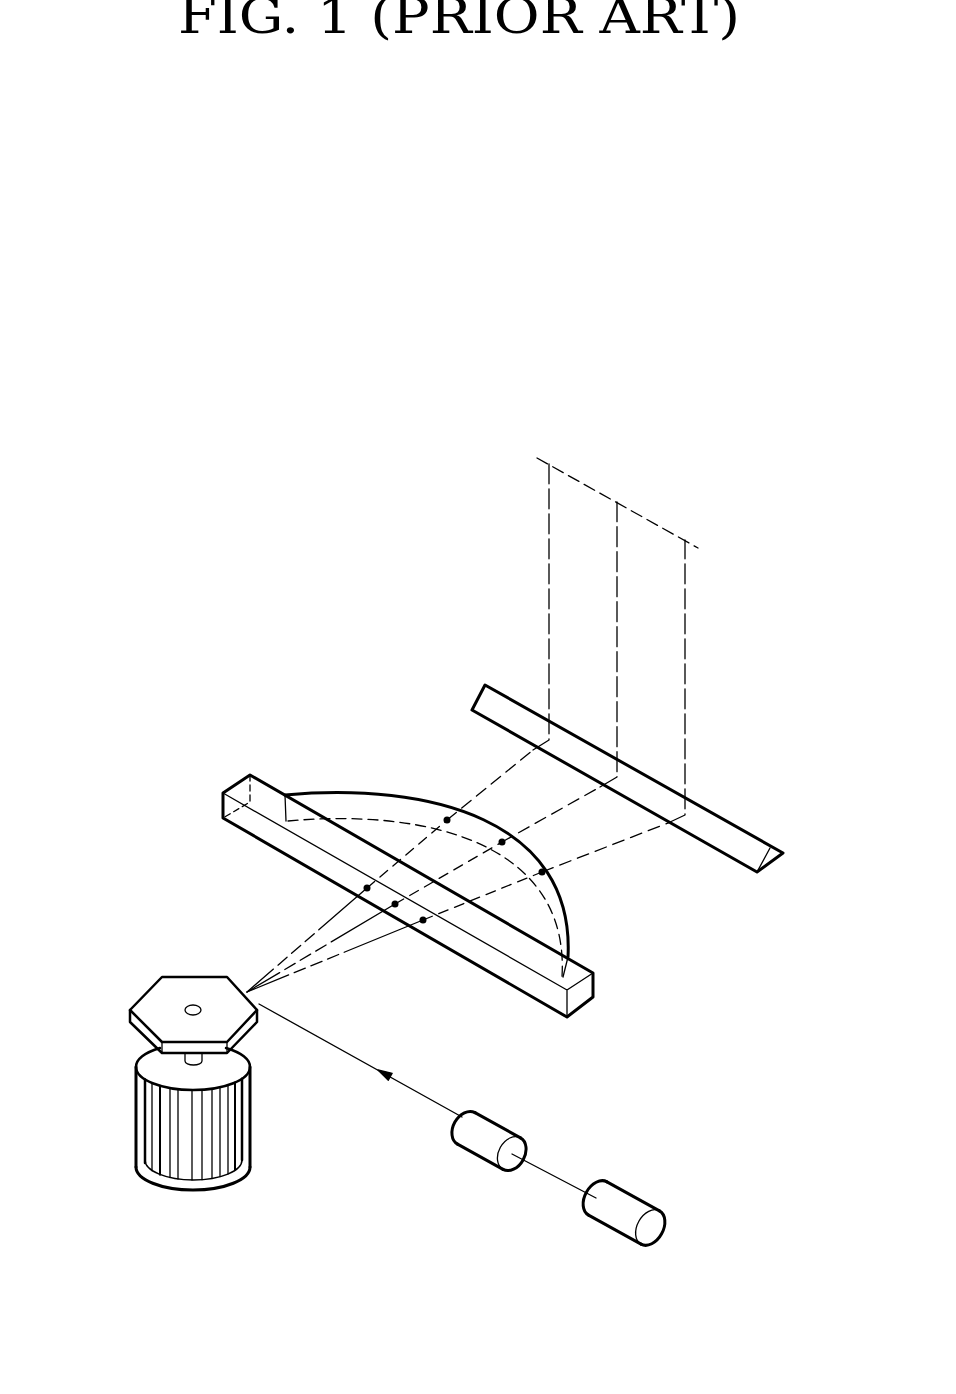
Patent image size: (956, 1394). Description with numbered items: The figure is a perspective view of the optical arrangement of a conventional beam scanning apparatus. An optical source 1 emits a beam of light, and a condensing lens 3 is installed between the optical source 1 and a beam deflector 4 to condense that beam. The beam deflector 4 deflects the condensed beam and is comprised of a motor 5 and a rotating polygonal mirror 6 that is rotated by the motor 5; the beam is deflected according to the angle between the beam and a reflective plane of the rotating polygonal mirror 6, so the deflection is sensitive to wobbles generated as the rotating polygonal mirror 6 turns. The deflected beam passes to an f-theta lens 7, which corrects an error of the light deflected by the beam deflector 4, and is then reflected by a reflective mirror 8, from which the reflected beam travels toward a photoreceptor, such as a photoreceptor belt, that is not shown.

The optical source 1 is at (620, 1227).
The condensing lens 3 is at (482, 1148).
The beam deflector 4 is at (139, 1083).
The motor 5 is at (57, 1053).
The rotating polygonal mirror 6 is at (130, 1017).
The f-theta lens 7 is at (590, 1007).
The reflective mirror 8 is at (783, 850).